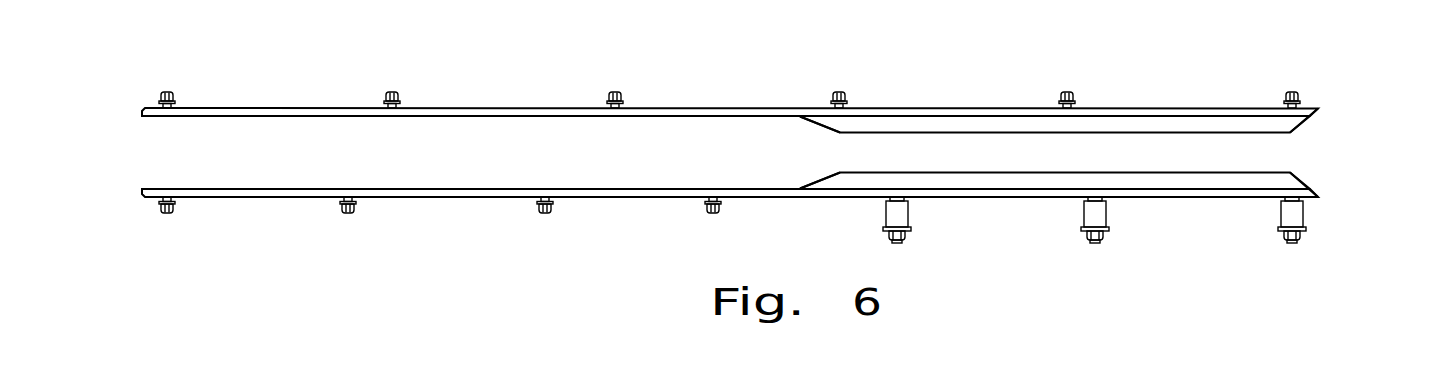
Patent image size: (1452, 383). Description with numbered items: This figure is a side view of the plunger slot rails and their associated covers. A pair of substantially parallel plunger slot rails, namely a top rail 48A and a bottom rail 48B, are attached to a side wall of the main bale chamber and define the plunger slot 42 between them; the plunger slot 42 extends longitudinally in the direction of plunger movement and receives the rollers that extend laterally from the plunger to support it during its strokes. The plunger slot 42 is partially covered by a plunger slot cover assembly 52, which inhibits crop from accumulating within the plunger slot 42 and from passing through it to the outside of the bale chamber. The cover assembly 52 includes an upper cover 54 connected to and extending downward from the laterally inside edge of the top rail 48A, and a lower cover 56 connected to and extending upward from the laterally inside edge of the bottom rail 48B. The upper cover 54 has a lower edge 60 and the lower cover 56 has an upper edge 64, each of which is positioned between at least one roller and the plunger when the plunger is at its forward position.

The plunger slot 42 is at (204, 148).
The top rail 48A is at (478, 109).
The bottom rail 48B is at (507, 198).
The plunger slot cover assembly 52 is at (1306, 127).
The upper cover 54 is at (840, 133).
The lower cover 56 is at (840, 172).
The lower edge 60 is at (910, 133).
The upper edge 64 is at (1005, 173).